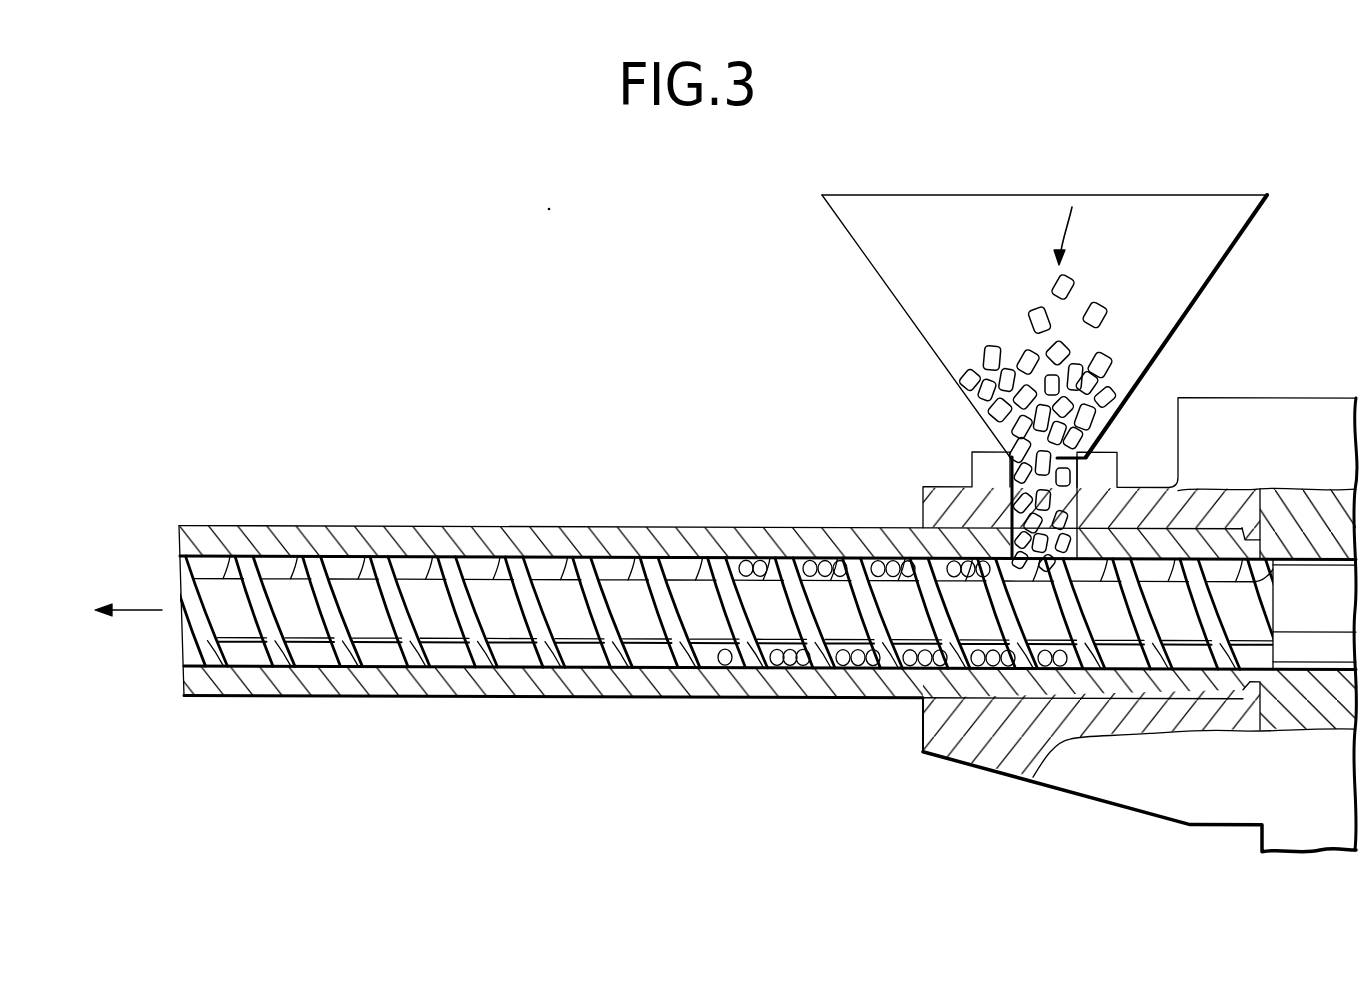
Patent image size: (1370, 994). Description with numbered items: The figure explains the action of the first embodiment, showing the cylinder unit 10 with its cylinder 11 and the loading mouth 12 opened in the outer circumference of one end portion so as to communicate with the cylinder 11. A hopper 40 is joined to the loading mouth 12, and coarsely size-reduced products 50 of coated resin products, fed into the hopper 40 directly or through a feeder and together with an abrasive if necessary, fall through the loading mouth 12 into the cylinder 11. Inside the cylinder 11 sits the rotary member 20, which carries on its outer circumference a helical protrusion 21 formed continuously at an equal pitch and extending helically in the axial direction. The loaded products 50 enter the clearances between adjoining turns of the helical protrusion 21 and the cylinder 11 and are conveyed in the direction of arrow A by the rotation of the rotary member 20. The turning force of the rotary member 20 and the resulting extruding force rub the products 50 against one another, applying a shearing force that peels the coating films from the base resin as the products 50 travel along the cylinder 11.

The cylinder unit 10 is at (273, 512).
The cylinder 11 is at (383, 527).
The loading mouth 12 is at (1010, 512).
The rotary member 20 is at (573, 610).
The helical protrusion 21 is at (596, 557).
The hopper 40 is at (1212, 254).
The size-reduced products 50 is at (1097, 364).